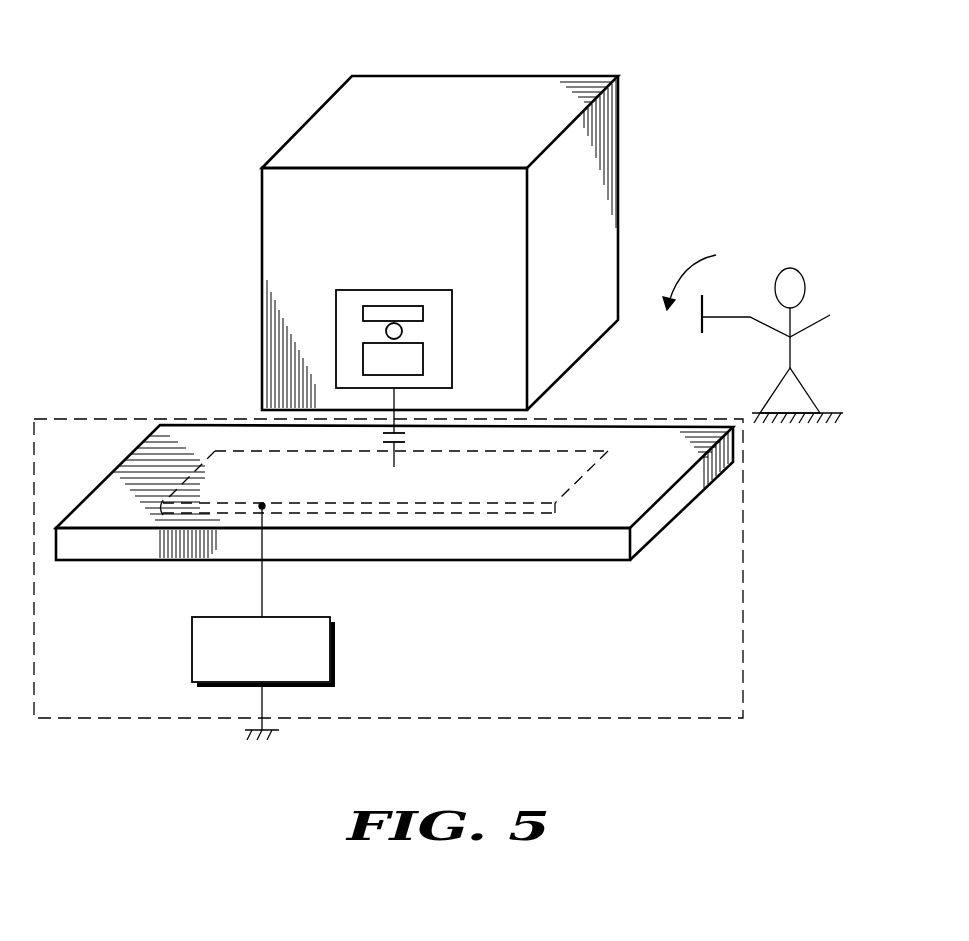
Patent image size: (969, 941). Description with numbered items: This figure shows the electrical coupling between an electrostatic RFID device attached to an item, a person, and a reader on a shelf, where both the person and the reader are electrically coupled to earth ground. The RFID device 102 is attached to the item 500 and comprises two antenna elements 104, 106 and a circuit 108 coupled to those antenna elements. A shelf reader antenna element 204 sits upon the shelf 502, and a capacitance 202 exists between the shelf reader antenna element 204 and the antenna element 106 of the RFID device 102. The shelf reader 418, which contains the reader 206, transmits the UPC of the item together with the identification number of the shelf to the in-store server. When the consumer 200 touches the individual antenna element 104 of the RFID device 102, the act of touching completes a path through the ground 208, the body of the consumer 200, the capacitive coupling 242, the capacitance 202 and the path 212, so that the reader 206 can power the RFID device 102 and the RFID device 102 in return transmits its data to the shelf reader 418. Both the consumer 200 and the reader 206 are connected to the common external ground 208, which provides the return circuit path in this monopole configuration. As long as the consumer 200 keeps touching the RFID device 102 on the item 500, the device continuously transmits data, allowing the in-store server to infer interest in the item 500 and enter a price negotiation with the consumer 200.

The item 500 is at (252, 236).
The RFID device 102 is at (452, 365).
The individual antenna element 104 is at (363, 312).
The antenna element 106 is at (363, 352).
The circuit 108 is at (386, 331).
The capacitive coupling 202 is at (405, 440).
The shelf reader 418 is at (745, 565).
The shelf 502 is at (688, 507).
The shelf reader antenna element 204 is at (433, 515).
The circuit path segment 212 is at (262, 582).
The reader 206 is at (322, 688).
The ground 208 is at (268, 738).
The consumer 200 is at (790, 268).
The capacitive coupling 242 is at (708, 276).